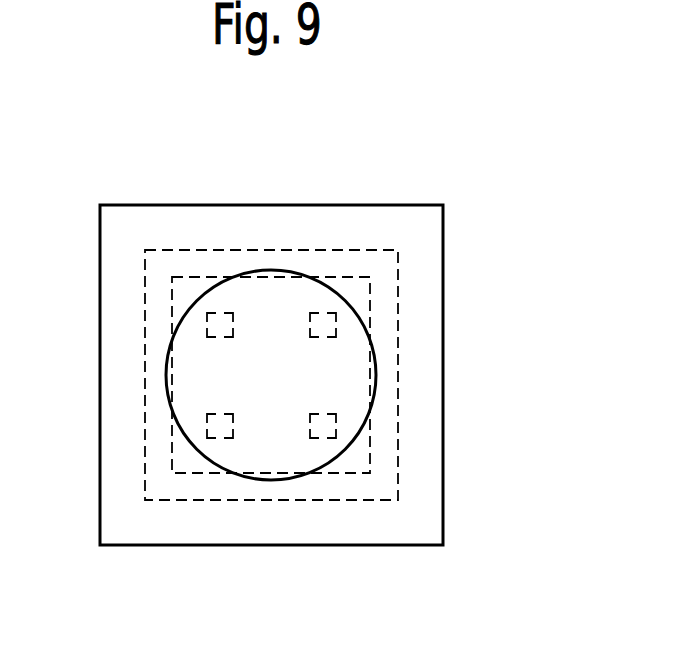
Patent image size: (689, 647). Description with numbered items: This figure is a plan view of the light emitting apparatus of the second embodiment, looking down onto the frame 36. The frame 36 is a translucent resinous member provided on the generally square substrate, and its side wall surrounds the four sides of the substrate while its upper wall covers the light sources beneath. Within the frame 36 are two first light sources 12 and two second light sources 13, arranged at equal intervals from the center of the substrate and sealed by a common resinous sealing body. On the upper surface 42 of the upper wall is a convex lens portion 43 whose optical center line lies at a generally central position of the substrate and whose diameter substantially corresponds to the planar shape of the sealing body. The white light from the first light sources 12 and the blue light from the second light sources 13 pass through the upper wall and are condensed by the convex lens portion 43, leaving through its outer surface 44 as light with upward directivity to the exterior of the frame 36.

The first light sources 12 is at (207, 316).
The second light sources 13 is at (336, 316).
The frame 36 is at (357, 204).
The upper surface 42 is at (422, 514).
The convex lens portion 43 is at (243, 276).
The outer surface 44 is at (235, 452).